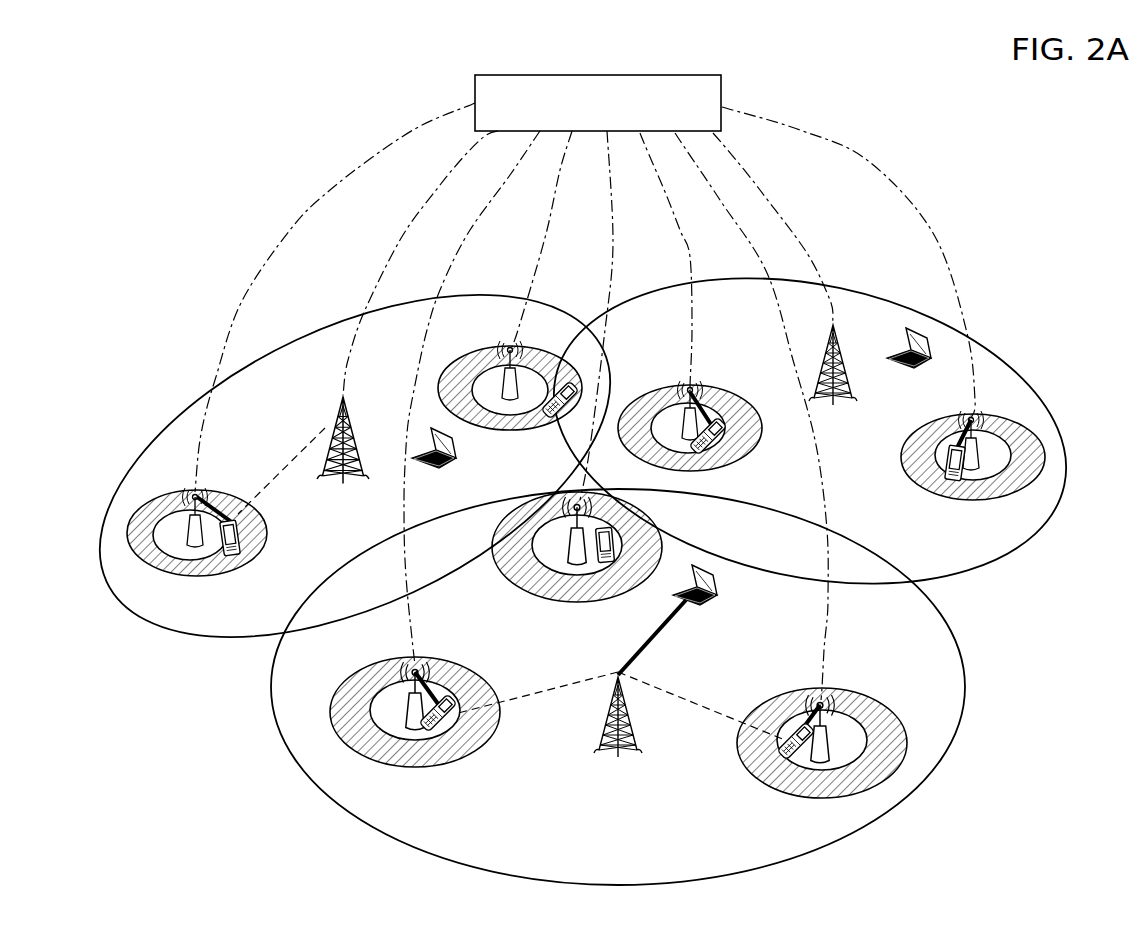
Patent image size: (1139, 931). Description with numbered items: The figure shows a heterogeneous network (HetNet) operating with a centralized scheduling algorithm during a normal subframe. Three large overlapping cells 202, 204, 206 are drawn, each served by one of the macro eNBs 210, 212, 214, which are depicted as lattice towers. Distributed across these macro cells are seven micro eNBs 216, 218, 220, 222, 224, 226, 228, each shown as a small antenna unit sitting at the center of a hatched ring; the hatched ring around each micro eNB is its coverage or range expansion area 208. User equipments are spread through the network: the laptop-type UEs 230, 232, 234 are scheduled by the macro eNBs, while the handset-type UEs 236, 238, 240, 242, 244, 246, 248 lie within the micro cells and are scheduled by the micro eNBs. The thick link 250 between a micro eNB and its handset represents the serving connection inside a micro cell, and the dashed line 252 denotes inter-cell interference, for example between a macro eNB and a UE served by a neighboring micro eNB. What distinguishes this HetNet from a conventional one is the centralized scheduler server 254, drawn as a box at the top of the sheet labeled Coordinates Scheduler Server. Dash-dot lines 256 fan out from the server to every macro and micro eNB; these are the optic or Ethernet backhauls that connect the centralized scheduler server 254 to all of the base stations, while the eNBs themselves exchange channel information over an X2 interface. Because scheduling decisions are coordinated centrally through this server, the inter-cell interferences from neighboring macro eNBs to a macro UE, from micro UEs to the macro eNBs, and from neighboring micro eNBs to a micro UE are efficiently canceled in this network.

The macro cell 202 is at (965, 685).
The macro cell 204 is at (173, 418).
The macro cell 206 is at (1067, 440).
The range expansion area 208 is at (873, 712).
The macro eNB 210 is at (618, 754).
The macro eNB 212 is at (347, 430).
The macro eNB 214 is at (833, 402).
The micro eNB 216 is at (825, 721).
The micro eNB 218 is at (417, 728).
The micro eNB 220 is at (577, 564).
The micro eNB 222 is at (197, 510).
The micro eNB 224 is at (517, 352).
The micro eNB 226 is at (700, 394).
The micro eNB 228 is at (976, 418).
The UE 230 is at (713, 598).
The UE 232 is at (445, 467).
The UE 234 is at (915, 332).
The UE 236 is at (787, 747).
The UE 238 is at (455, 724).
The UE 240 is at (608, 566).
The UE 242 is at (241, 540).
The UE 244 is at (557, 413).
The UE 246 is at (735, 447).
The UE 248 is at (957, 482).
The small cell link 250 is at (215, 508).
The inter-cell interference 252 is at (298, 448).
The centralized scheduler server 254 is at (600, 75).
The optic backhaul or Ethernet backhaul 256 is at (335, 297).